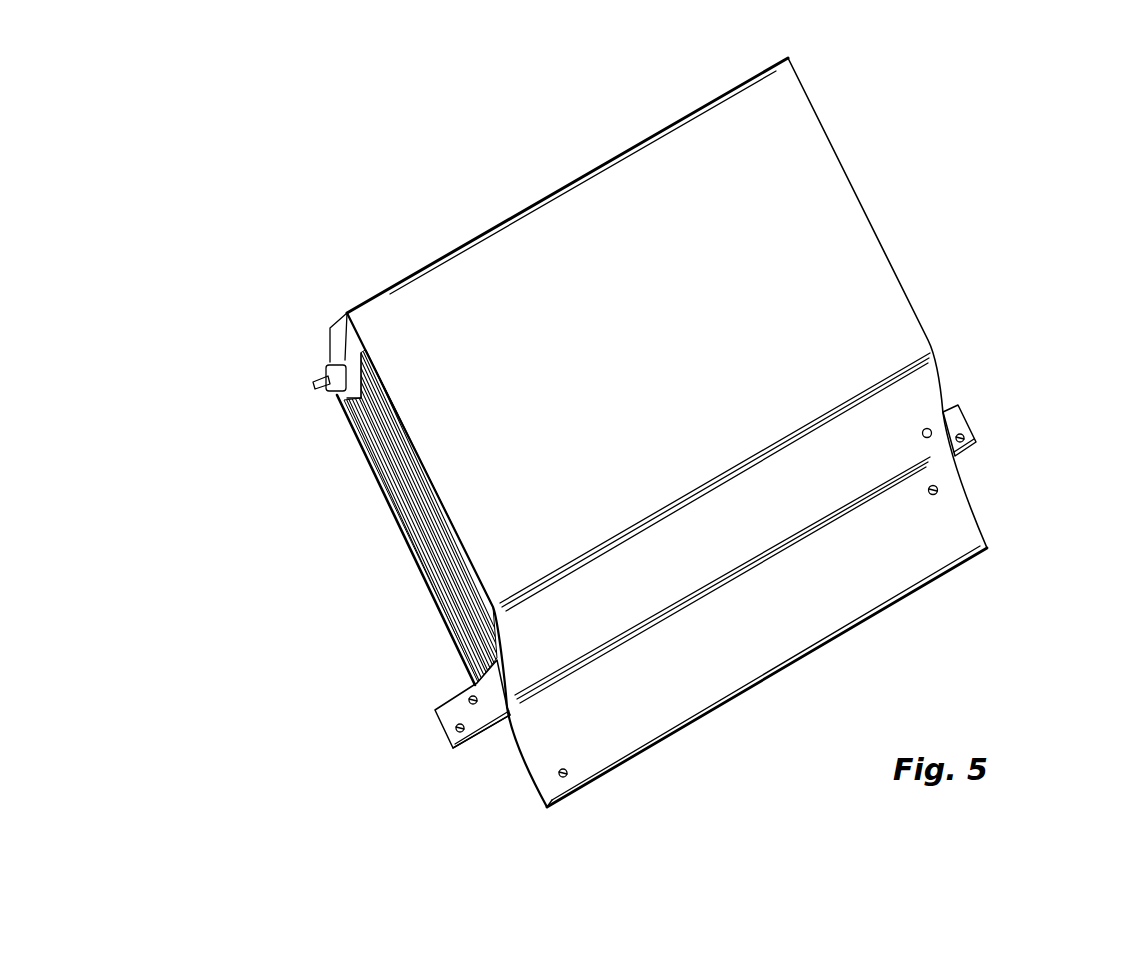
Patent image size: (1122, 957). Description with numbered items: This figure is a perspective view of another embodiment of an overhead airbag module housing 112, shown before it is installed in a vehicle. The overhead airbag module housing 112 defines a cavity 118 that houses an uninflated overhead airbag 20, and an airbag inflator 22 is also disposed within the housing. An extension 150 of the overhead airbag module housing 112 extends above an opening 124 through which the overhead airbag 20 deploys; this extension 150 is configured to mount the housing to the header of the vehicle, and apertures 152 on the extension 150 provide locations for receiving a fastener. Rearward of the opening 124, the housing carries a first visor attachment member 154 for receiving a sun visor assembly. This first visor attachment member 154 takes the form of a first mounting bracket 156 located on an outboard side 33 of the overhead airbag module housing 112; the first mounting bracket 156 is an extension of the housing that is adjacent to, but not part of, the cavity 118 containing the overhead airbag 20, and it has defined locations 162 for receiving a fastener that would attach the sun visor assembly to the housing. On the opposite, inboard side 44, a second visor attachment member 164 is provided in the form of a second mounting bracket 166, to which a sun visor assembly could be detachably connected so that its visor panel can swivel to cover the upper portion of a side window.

The overhead airbag module housing 112 is at (905, 150).
The extension 150 is at (967, 537).
The apertures 152 is at (540, 800).
The overhead airbag 20 is at (393, 507).
The cavity 118 is at (380, 457).
The airbag inflator 22 is at (330, 357).
The first visor attachment member 154 is at (391, 691).
The first mounting bracket 156 is at (433, 690).
The defined locations 162 is at (457, 726).
The opening 124 is at (497, 740).
The second visor attachment member 164 is at (994, 405).
The second mounting bracket 166 is at (959, 430).
The outboard side 33 is at (642, 848).
The inboard side 44 is at (1118, 572).